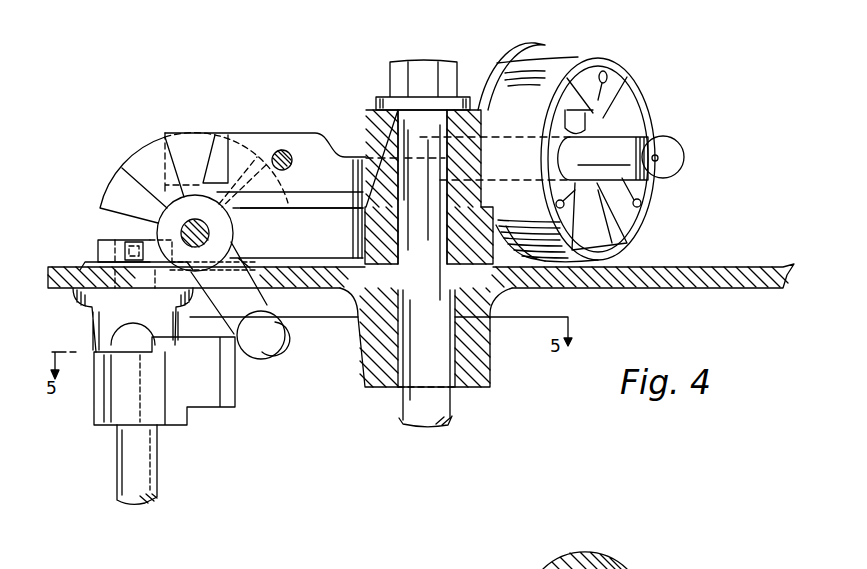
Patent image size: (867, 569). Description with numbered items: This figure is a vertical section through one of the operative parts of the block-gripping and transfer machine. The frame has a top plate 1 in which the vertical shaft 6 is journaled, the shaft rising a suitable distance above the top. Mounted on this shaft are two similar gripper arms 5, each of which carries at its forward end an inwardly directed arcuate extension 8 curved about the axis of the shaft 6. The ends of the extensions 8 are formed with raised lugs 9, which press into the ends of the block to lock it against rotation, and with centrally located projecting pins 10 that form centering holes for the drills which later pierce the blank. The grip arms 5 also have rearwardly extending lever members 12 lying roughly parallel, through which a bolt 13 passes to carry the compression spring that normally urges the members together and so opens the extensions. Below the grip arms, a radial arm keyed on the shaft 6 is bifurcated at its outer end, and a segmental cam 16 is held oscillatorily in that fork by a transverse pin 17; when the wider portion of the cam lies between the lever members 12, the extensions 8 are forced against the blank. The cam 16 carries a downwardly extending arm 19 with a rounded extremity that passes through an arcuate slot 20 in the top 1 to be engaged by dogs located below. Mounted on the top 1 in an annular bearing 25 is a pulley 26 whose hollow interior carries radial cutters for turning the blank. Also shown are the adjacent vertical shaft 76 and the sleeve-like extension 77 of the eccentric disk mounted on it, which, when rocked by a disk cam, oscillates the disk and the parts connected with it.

The top plate 1 is at (731, 266).
The gripper arms 5 is at (367, 124).
The vertical shaft 6 is at (453, 421).
The arcuate extension 8 is at (634, 128).
The raised lugs 9 is at (658, 163).
The projecting pins 10 is at (679, 149).
The lever members 12 is at (250, 132).
The bolt 13 is at (285, 150).
The segmental cam 16 is at (118, 182).
The transverse pin 17 is at (209, 233).
The downwardly extending arm 19 is at (280, 308).
The arcuate slot 20 is at (255, 266).
The annular bearing 25 is at (492, 56).
The pulley 26 is at (603, 59).
The vertical shaft 76 is at (158, 480).
The sleeve-like extension 77 is at (200, 393).